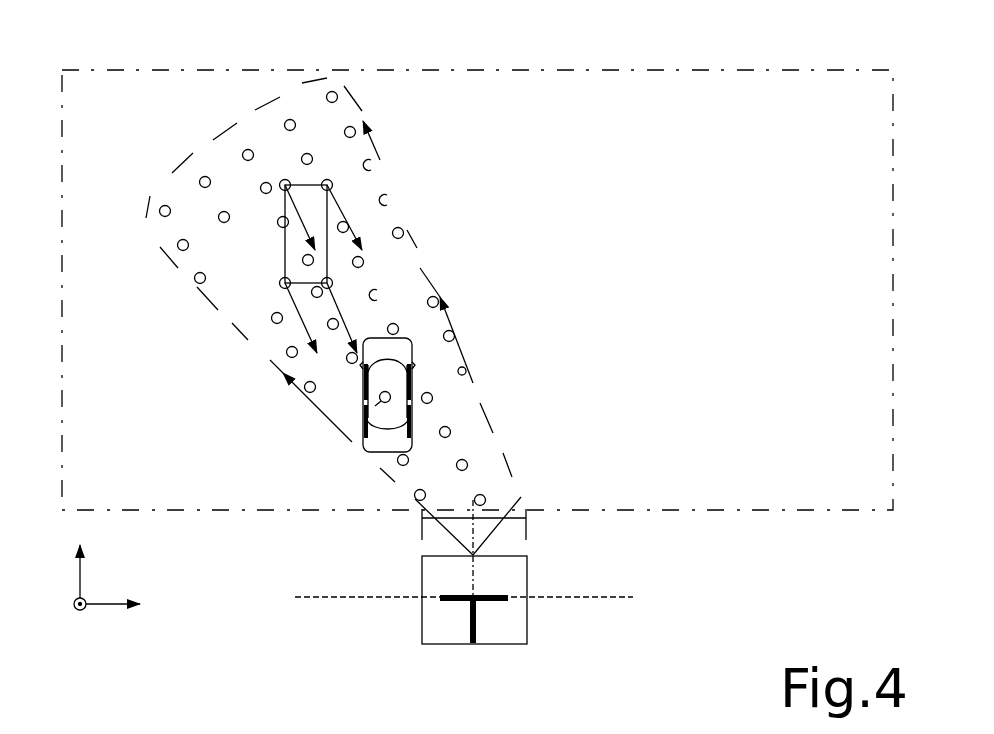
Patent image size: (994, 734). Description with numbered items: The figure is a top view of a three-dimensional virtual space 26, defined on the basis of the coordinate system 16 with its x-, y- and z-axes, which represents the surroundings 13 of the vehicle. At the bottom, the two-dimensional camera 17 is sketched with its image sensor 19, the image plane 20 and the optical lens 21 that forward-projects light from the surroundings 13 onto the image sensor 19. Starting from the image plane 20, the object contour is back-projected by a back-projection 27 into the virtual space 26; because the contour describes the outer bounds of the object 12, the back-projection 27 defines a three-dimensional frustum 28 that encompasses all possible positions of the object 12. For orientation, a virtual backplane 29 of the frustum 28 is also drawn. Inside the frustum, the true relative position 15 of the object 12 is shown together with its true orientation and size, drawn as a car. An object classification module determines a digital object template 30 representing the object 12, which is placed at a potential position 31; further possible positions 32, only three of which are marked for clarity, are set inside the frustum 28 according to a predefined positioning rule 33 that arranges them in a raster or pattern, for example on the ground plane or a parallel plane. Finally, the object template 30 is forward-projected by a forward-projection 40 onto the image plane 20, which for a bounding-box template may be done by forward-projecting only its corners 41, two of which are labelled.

The object 12 is at (376, 455).
The surroundings 13 is at (653, 217).
The relative position 15 is at (358, 440).
The coordinate system 16 is at (83, 583).
The 2D camera 17 is at (422, 607).
The image sensor 19 is at (527, 598).
The image plane 20 is at (313, 597).
The optical lens 21 is at (503, 530).
The three-dimensional virtual space 26 is at (518, 105).
The back-projection 27 is at (460, 335).
The three-dimensional frustum 28 is at (378, 140).
The virtual backplane 29 is at (168, 162).
The digital object template 30 is at (285, 245).
The potential position 31 is at (314, 260).
The possible positions 32 is at (205, 176).
The positioning rule 33 is at (344, 114).
The forward-projection 40 is at (285, 207).
The corners 41 is at (327, 185).